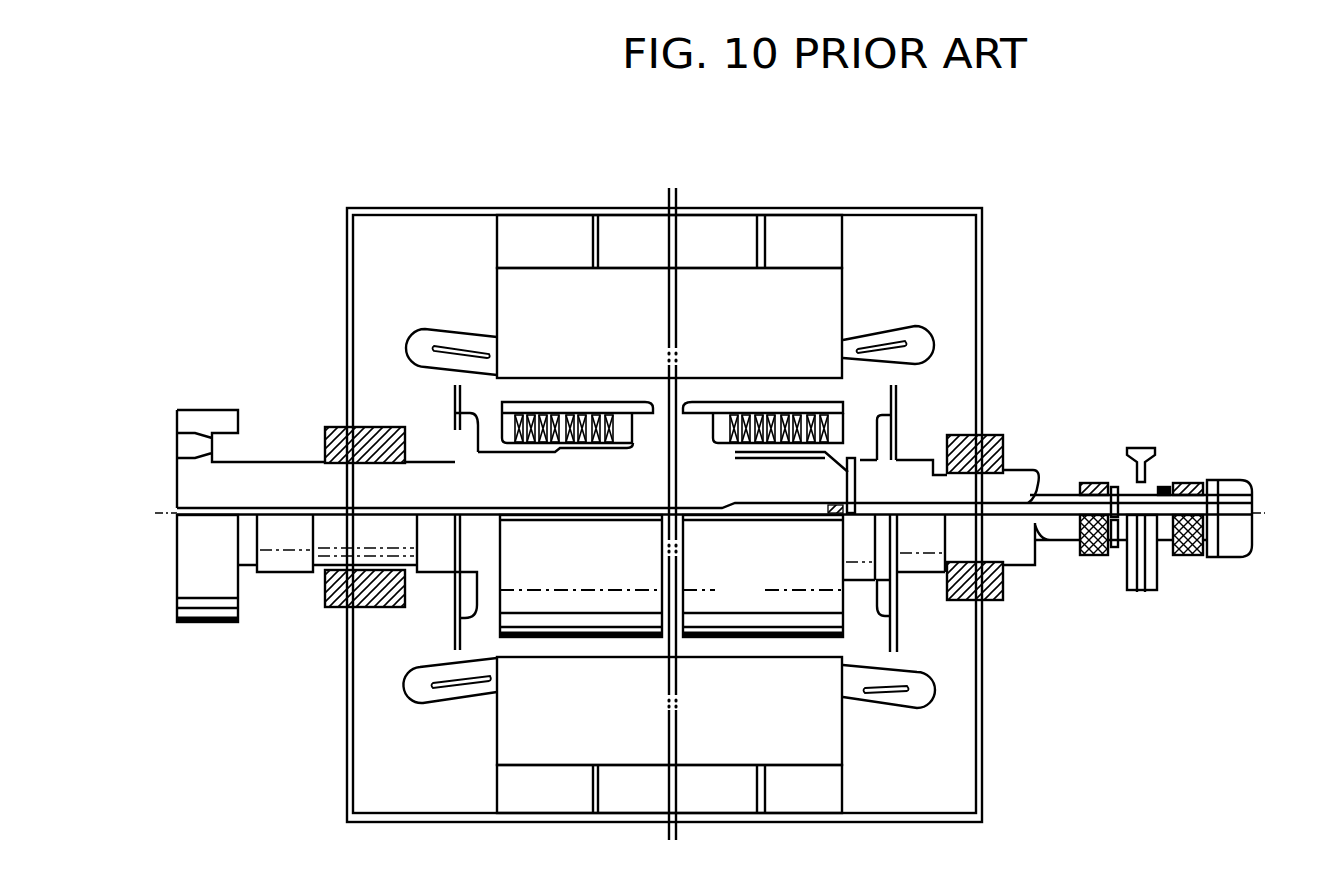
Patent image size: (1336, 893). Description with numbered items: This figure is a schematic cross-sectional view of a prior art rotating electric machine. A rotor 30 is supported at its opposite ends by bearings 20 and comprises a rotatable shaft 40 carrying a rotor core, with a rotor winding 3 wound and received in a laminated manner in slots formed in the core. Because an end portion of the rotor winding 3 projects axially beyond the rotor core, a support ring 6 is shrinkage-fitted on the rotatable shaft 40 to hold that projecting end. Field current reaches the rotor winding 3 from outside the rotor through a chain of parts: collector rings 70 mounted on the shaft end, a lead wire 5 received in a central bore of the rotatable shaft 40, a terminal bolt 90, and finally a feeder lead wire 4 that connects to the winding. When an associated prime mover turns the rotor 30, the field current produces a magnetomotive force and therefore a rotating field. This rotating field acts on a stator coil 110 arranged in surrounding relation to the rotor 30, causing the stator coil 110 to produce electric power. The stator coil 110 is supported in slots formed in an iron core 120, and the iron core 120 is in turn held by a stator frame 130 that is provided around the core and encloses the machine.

The stator frame 130 is at (965, 210).
The iron core 120 is at (760, 315).
The stator coil 110 is at (917, 323).
The bearings 20 is at (370, 425).
The rotor 30 is at (762, 612).
The support ring 6 is at (763, 398).
The rotor winding 3 is at (820, 417).
The feeder lead wire 4 is at (775, 468).
The terminal bolt 90 is at (857, 458).
The lead wire 5 is at (1027, 503).
The rotatable shaft 40 is at (1057, 537).
The collector rings 70 is at (1095, 482).